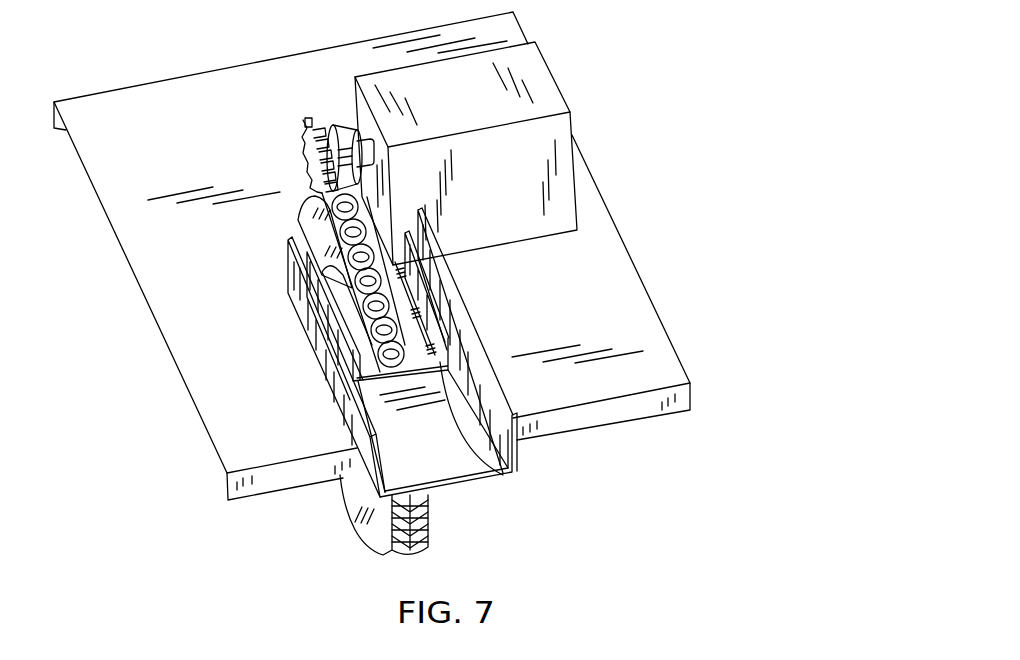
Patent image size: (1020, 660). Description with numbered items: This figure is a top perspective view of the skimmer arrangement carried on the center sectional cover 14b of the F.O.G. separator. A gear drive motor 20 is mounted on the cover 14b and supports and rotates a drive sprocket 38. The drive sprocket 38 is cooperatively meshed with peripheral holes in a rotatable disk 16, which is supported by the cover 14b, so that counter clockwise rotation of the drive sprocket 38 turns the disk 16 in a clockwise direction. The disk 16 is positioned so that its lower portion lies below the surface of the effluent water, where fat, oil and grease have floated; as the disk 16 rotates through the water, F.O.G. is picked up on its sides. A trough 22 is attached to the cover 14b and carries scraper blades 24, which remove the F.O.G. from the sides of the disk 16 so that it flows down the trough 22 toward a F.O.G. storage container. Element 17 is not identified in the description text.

The center sectional cover 14b is at (244, 322).
The rotatable disk 16 is at (323, 235).
The guide rail 17 is at (385, 352).
The gear drive motor 20 is at (475, 106).
The trough 22 is at (436, 445).
The scraper blades 24 is at (503, 475).
The drive sprocket 38 is at (340, 140).